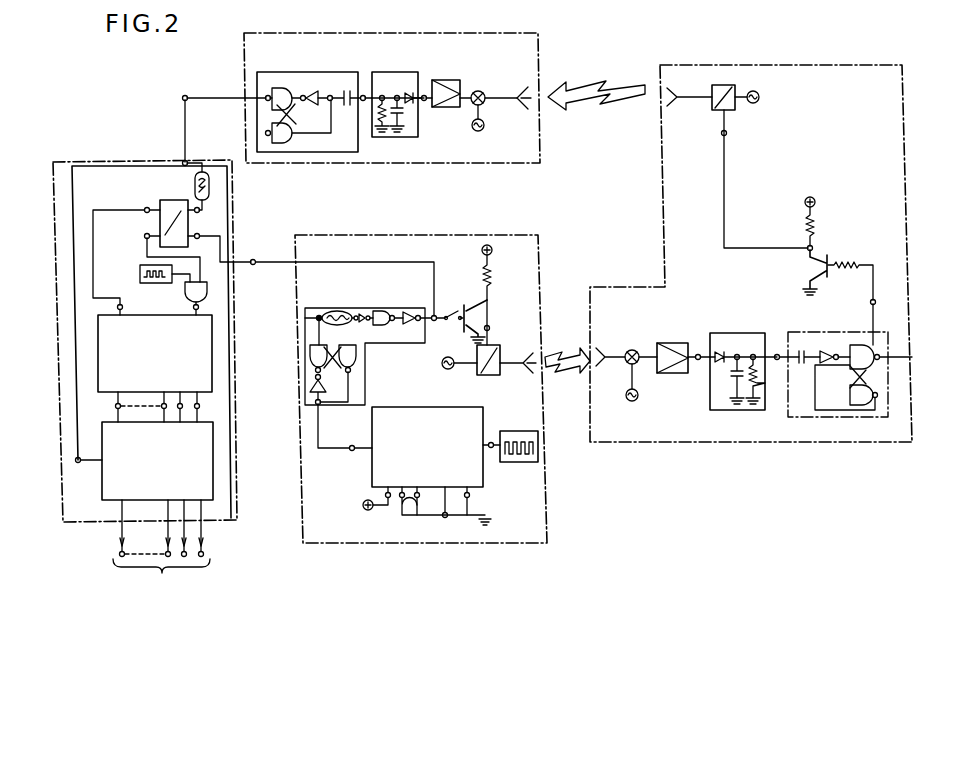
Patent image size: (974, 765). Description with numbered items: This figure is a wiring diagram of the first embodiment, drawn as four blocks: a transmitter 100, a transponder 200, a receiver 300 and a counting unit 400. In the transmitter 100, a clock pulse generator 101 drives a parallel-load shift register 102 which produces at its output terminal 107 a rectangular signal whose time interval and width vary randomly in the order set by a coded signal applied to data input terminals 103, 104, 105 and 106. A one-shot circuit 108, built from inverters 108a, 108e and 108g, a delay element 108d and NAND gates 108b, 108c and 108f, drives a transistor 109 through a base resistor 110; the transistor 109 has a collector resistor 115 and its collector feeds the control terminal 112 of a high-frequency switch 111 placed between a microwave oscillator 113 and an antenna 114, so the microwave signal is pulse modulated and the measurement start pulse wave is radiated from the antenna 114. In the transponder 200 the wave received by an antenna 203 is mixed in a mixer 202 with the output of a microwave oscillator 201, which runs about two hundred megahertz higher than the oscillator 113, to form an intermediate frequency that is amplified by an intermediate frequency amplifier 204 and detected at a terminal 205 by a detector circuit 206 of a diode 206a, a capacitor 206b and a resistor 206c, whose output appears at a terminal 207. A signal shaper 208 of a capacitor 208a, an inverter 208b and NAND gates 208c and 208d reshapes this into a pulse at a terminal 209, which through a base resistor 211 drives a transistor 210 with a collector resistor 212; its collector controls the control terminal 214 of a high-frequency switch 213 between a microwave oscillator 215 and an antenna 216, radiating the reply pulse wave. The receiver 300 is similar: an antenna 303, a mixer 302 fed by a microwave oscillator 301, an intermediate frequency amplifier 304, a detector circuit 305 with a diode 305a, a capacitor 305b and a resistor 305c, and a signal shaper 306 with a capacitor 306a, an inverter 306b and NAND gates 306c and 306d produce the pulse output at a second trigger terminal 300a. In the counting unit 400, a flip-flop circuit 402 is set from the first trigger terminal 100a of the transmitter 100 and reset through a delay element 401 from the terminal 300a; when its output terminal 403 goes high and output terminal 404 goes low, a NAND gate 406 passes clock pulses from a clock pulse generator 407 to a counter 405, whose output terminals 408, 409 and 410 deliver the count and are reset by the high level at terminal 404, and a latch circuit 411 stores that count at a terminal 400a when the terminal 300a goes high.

The transmitter 100 is at (549, 372).
The first trigger terminal 100a is at (266, 253).
The clock pulse generator 101 is at (538, 444).
The parallel-load shift register 102 is at (440, 407).
The data input terminal 103 is at (470, 495).
The data input terminal 104 is at (436, 515).
The data input terminal 105 is at (402, 506).
The data input terminal 106 is at (384, 495).
The output terminal 107 is at (348, 447).
The one-shot circuit 108 is at (438, 338).
The inverter 108a is at (330, 384).
The NAND gate 108b is at (310, 357).
The NAND gate 108c is at (355, 354).
The delay element 108d is at (340, 309).
The inverter 108e is at (370, 296).
The NAND gate 108f is at (386, 309).
The inverter 108g is at (410, 312).
The transistor 109 is at (490, 318).
The base resistor 110 is at (454, 312).
The high-frequency switch 111 is at (491, 376).
The control terminal 112 is at (490, 330).
The microwave oscillator 113 is at (449, 370).
The antenna 114 is at (527, 370).
The collector resistor 115 is at (492, 280).
The transponder 200 is at (764, 442).
The microwave oscillator 201 is at (628, 398).
The mixer 202 is at (632, 350).
The antenna 203 is at (606, 349).
The intermediate frequency amplifier 204 is at (682, 334).
The terminal 205 is at (698, 354).
The detector circuit 206 is at (716, 333).
The diode 206a is at (725, 350).
The capacitor 206b is at (730, 376).
The resistor 206c is at (758, 385).
The terminal 207 is at (778, 352).
The signal shaper 208 is at (808, 418).
The capacitor 208a is at (801, 349).
The inverter 208b is at (831, 345).
The NAND gate 208c is at (902, 357).
The NAND gate 208d is at (864, 408).
The terminal 209 is at (885, 298).
The transistor 210 is at (812, 274).
The base resistor 211 is at (848, 265).
The collector resistor 212 is at (815, 233).
The high-frequency switch 213 is at (722, 85).
The control terminal 214 is at (727, 133).
The microwave oscillator 215 is at (760, 97).
The antenna 216 is at (676, 84).
The receiver 300 is at (536, 62).
The second trigger terminal 300a is at (182, 104).
The microwave oscillator 301 is at (484, 127).
The mixer 302 is at (478, 90).
The antenna 303 is at (519, 88).
The intermediate frequency amplifier 304 is at (448, 85).
The detector circuit 305 is at (394, 72).
The diode 305a is at (412, 90).
The capacitor 305b is at (404, 114).
The resistor 305c is at (386, 137).
The signal shaper 306 is at (301, 72).
The capacitor 306a is at (347, 90).
The inverter 306b is at (320, 90).
The NAND gate 306c is at (279, 88).
The NAND gate 306d is at (292, 143).
The counting unit 400 is at (148, 160).
The terminal 400a is at (161, 544).
The delay element 401 is at (212, 190).
The flip-flop circuit 402 is at (192, 223).
The output terminal 403 is at (144, 236).
The output terminal 404 is at (144, 210).
The counter 405 is at (72, 352).
The NAND gate 406 is at (186, 294).
The clock pulse generator 407 is at (140, 276).
The output terminal 408 is at (200, 408).
The output terminal 409 is at (200, 404).
The output terminal 410 is at (118, 405).
The latch circuit 411 is at (101, 490).